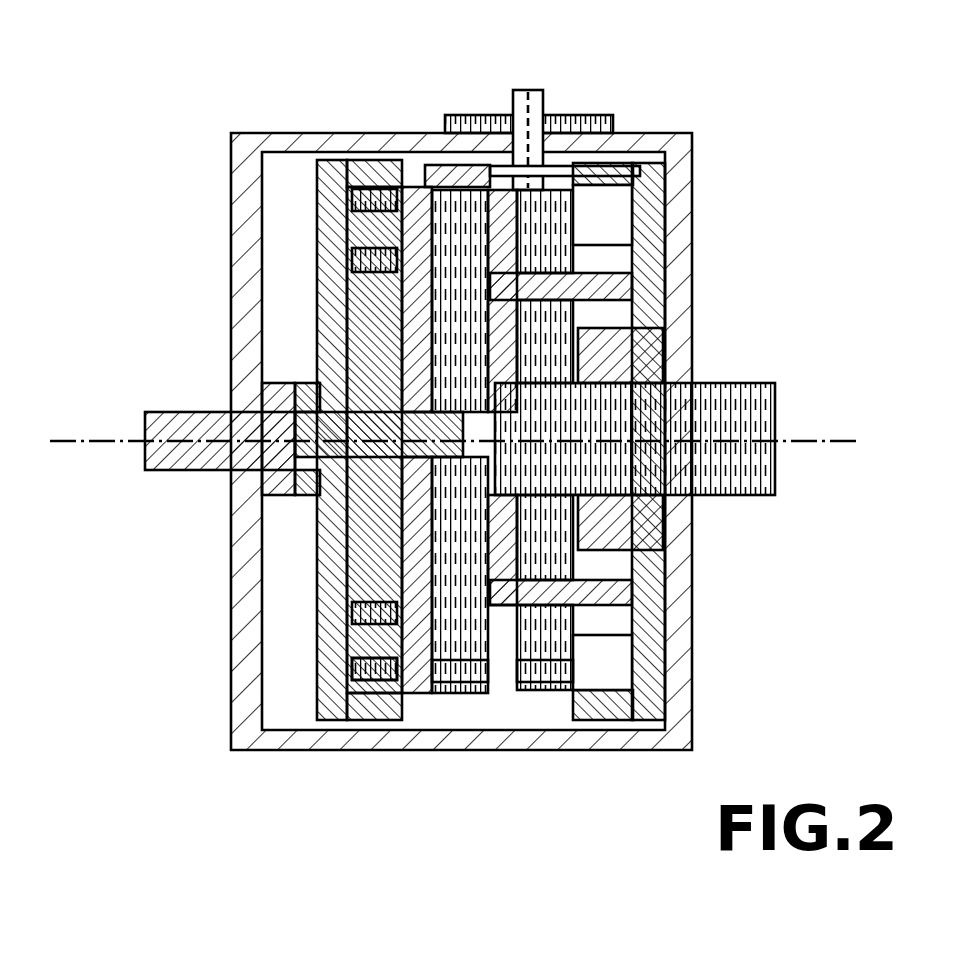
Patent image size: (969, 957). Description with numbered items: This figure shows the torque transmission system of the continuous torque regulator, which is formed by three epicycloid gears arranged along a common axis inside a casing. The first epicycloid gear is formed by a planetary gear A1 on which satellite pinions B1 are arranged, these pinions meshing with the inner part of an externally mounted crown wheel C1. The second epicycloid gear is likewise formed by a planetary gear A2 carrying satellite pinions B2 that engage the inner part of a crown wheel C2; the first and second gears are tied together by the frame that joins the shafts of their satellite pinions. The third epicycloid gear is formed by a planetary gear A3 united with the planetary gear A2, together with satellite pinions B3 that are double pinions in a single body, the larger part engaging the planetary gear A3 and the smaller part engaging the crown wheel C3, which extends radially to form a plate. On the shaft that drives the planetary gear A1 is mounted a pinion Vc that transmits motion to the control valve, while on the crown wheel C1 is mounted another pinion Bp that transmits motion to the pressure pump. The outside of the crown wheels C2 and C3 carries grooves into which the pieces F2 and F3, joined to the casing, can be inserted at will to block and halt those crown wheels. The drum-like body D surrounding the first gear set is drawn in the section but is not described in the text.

The crown wheel C1 is at (345, 178).
The crown wheel C2 is at (435, 175).
The crown wheel C3 is at (650, 195).
The drum D is at (398, 240).
The planetary gear A1 is at (360, 300).
The planetary gear A2 is at (445, 350).
The planetary gear A3 is at (553, 460).
The piece F2 is at (500, 165).
The piece F3 is at (552, 165).
The satellite pinions B1 is at (365, 678).
The satellite pinions B2 is at (455, 688).
The satellite pinions B3 is at (555, 680).
The pinion Vc is at (278, 477).
The pump Bp is at (302, 487).